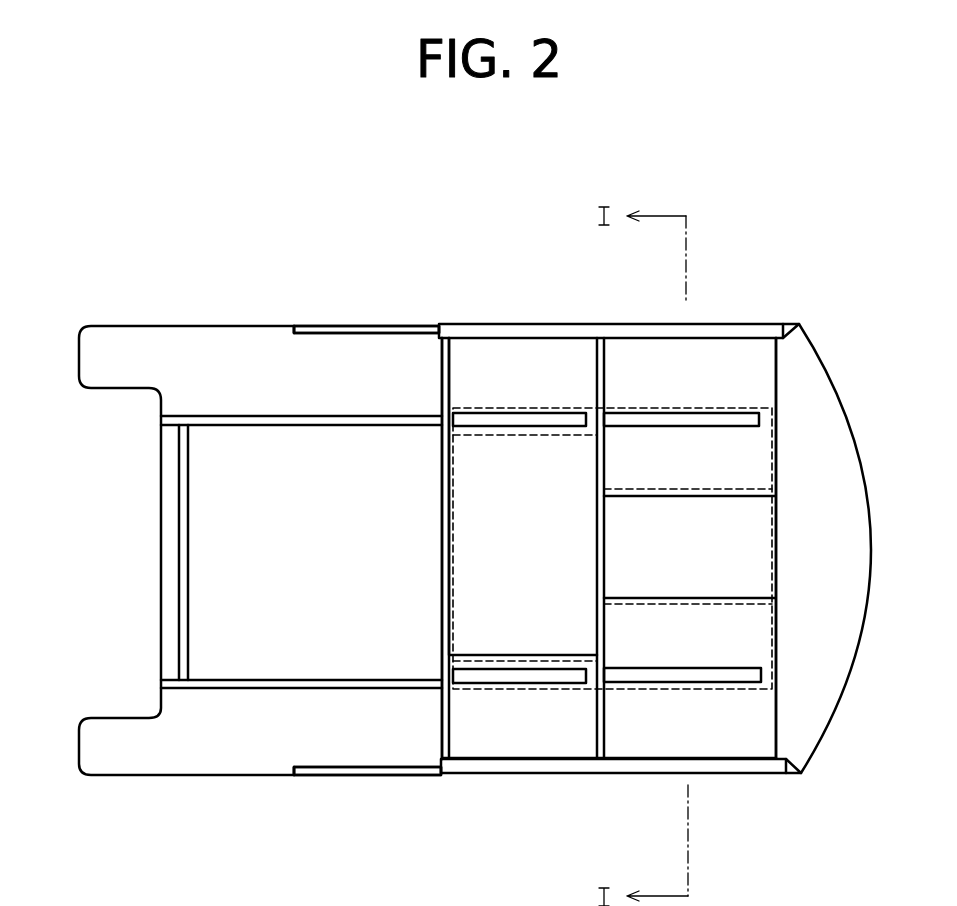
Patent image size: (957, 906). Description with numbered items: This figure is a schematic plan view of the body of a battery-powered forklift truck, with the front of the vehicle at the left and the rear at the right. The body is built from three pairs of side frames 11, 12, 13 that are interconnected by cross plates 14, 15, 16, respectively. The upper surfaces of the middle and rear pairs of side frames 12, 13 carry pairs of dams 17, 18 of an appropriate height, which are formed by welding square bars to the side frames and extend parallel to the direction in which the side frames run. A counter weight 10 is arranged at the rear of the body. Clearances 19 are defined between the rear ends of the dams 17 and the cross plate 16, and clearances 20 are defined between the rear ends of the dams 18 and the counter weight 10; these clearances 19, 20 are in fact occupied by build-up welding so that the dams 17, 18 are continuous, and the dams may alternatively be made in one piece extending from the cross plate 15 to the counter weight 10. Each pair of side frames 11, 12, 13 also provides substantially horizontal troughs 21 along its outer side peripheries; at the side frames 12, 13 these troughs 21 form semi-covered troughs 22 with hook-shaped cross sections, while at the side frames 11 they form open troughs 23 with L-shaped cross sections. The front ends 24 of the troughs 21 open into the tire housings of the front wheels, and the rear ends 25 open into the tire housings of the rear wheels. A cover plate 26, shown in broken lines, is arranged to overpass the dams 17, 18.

The counter weight 10 is at (833, 410).
The side frames 11 is at (253, 416).
The side frames 12 is at (522, 365).
The side frames 13 is at (757, 357).
The cross plate 14 is at (170, 513).
The cross plate 15 is at (448, 363).
The cross plate 16 is at (600, 355).
The dams 17 is at (543, 417).
The dams 18 is at (700, 397).
The clearances 19 is at (589, 423).
The clearances 20 is at (760, 426).
The troughs 21 is at (455, 246).
The semi-covered troughs 22 is at (470, 323).
The open troughs 23 is at (380, 324).
The front ends 24 is at (292, 323).
The rear ends 25 is at (783, 328).
The cover plate 26 is at (775, 528).